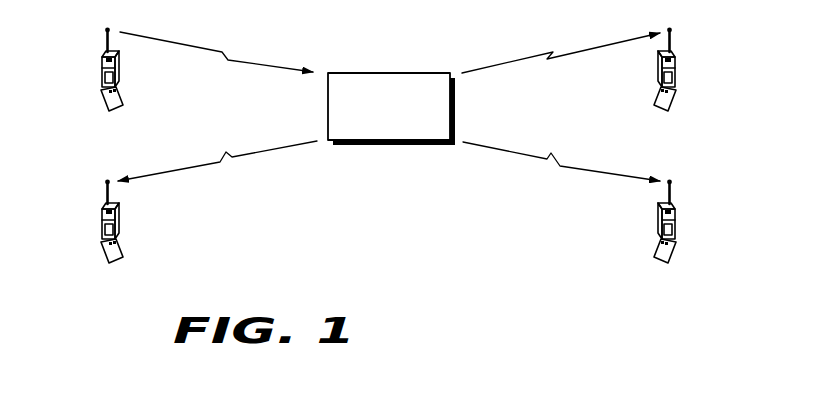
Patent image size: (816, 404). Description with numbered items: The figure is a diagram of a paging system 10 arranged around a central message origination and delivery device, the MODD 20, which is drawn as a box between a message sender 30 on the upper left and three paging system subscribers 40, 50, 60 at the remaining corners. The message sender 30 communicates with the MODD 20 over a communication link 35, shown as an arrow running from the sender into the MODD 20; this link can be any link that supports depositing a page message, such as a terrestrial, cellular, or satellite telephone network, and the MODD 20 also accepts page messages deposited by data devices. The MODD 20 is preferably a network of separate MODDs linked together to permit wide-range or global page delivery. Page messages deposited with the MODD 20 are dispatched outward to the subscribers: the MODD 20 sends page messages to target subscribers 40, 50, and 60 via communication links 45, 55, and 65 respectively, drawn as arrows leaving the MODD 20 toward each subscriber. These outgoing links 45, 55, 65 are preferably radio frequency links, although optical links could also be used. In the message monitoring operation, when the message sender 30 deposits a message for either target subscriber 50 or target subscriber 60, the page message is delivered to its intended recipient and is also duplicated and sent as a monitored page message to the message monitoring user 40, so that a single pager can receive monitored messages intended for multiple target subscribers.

The paging system 10 is at (362, 264).
The message origination and delivery device (MODD) 20 is at (392, 72).
The message sender 30 is at (98, 67).
The paging system subscriber (message monitoring user) 40 is at (100, 218).
The paging system subscriber 50 is at (678, 65).
The paging system subscriber 60 is at (679, 219).
The communication link 35 is at (243, 55).
The communication link 45 is at (243, 160).
The communication link 55 is at (533, 53).
The communication link 65 is at (533, 160).